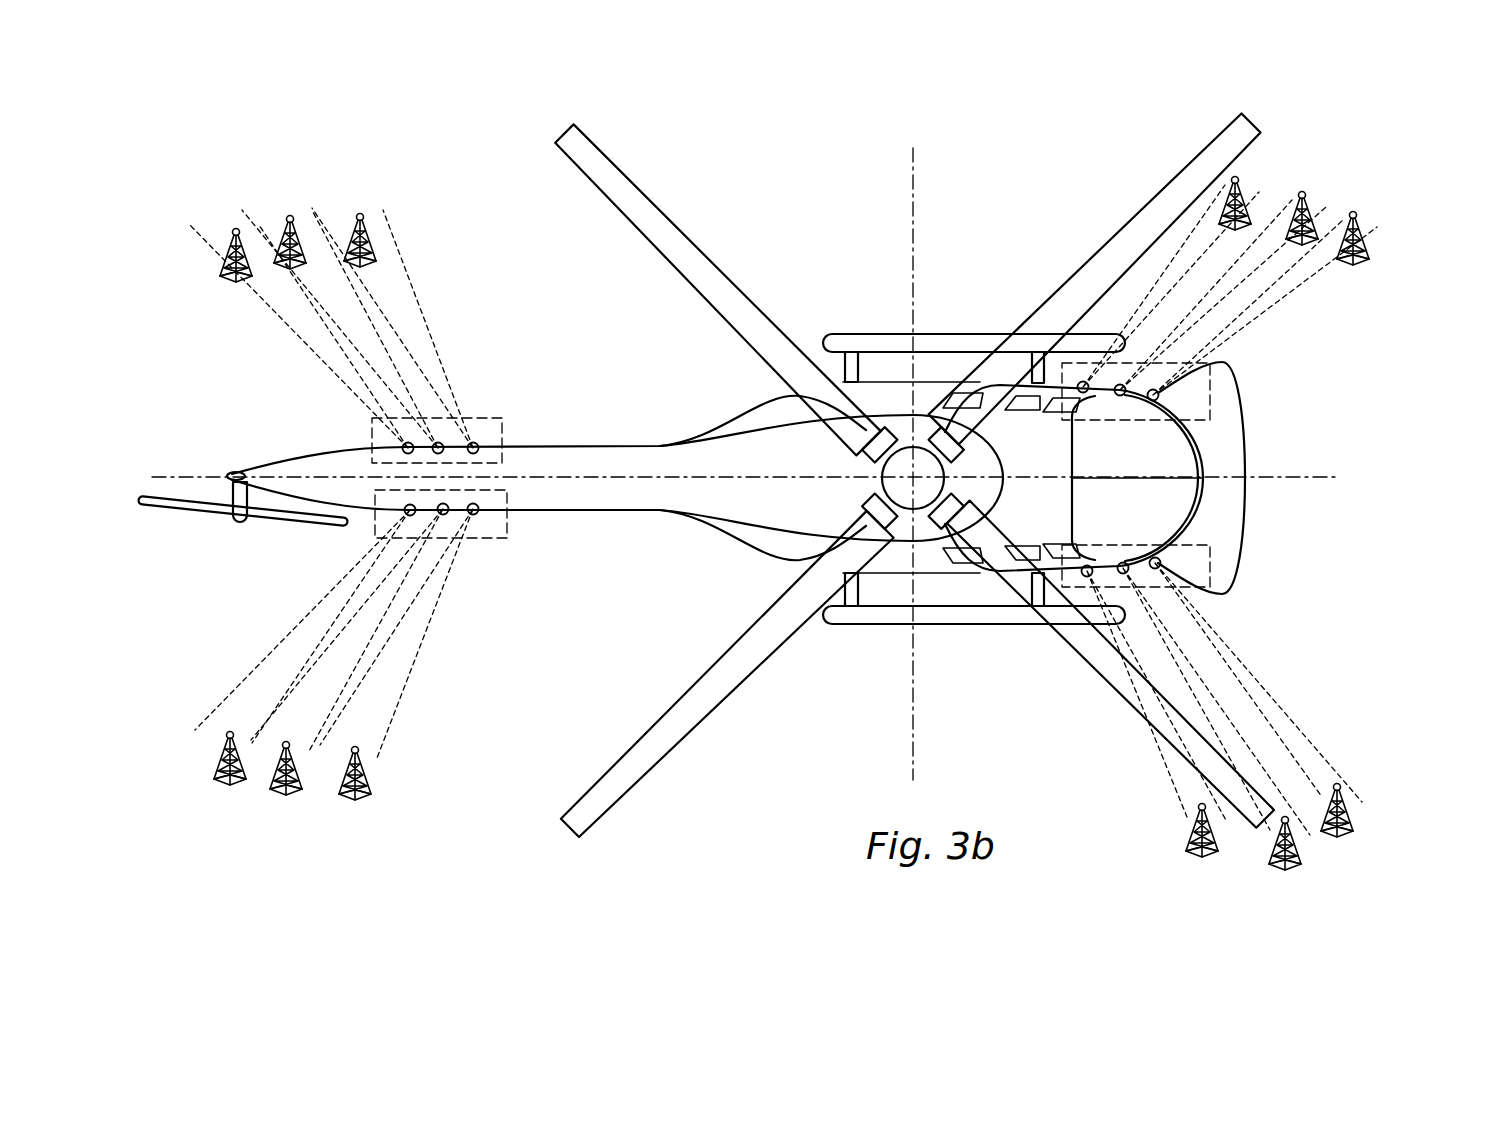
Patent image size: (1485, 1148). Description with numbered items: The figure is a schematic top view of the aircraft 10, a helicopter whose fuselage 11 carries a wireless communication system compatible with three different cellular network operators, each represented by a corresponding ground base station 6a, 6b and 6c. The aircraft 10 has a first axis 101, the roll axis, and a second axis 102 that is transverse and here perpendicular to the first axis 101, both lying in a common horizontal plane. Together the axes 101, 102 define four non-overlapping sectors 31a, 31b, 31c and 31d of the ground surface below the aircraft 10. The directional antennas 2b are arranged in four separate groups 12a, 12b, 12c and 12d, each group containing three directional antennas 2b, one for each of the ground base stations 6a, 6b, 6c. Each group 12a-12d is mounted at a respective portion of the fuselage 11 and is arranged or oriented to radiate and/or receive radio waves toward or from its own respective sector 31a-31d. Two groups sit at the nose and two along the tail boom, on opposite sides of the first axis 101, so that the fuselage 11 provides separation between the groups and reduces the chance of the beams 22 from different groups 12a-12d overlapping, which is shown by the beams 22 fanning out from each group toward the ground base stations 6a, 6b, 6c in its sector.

The aircraft 10 is at (914, 449).
The fuselage 11 is at (718, 425).
The first axis 101 is at (193, 475).
The second axis 102 is at (913, 148).
The group of directional antennas 12a is at (1150, 423).
The group of directional antennas 12b is at (1212, 588).
The group of directional antennas 12c is at (508, 536).
The group of directional antennas 12d is at (503, 420).
The directional antenna 2b is at (404, 443).
The beam 22 is at (438, 272).
The sector 31a is at (1095, 279).
The sector 31b is at (1110, 664).
The sector 31c is at (727, 674).
The sector 31d is at (718, 289).
The ground base station 6a is at (236, 228).
The ground base station 6b is at (290, 215).
The ground base station 6c is at (362, 214).